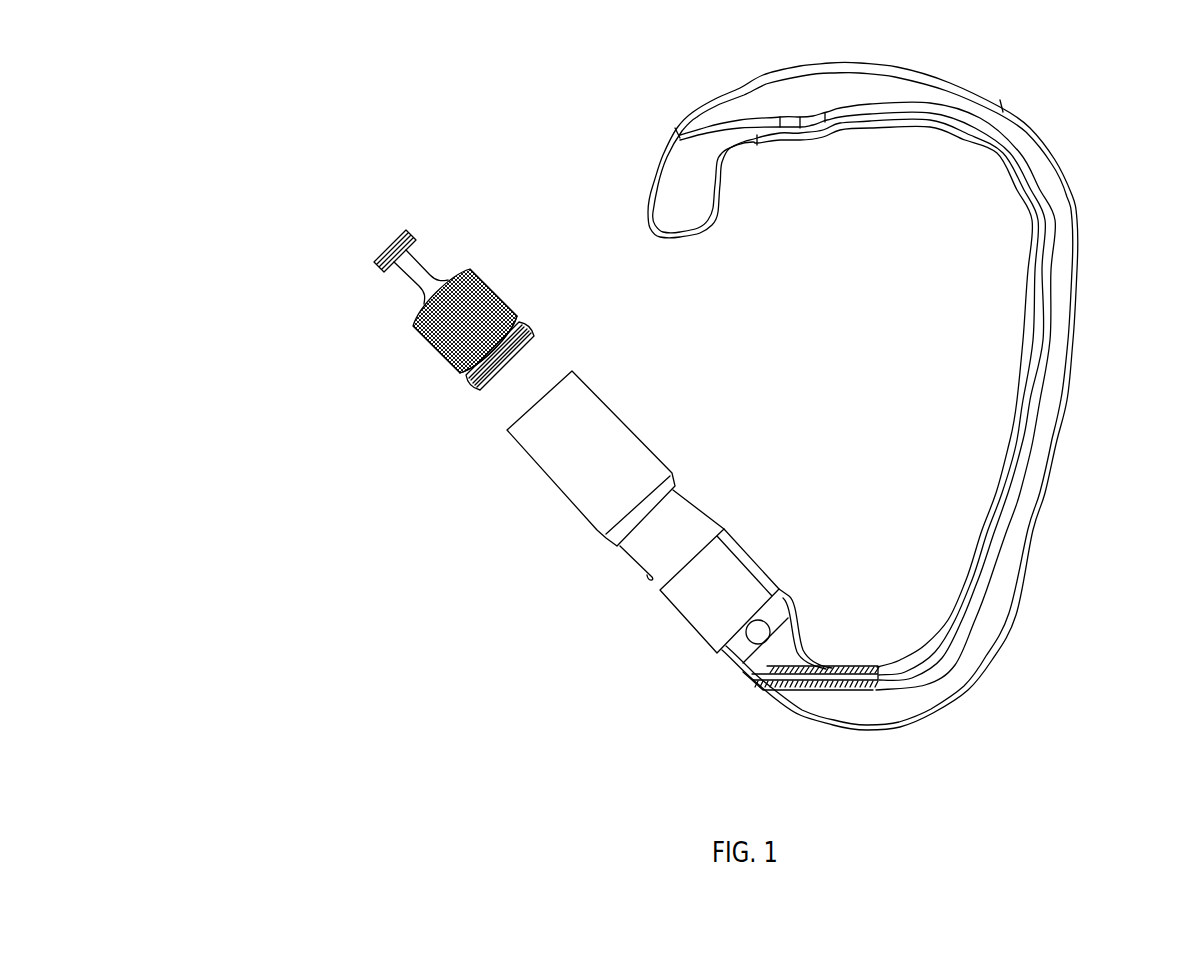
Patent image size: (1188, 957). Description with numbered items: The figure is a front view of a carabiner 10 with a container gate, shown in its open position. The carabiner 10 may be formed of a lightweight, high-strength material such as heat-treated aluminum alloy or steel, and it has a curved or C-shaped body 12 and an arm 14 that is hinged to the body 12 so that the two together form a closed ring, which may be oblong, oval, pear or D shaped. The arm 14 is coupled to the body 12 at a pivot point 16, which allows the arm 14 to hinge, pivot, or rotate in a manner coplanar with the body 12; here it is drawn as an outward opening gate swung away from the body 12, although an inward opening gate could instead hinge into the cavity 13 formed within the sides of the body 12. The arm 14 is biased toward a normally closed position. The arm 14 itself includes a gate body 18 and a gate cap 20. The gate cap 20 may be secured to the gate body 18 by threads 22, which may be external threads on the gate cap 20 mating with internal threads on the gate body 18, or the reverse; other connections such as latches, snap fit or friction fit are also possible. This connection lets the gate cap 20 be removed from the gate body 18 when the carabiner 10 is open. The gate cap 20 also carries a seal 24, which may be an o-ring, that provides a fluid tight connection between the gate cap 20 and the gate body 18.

The carabiner 10 is at (264, 130).
The body 12 is at (1089, 150).
The cavity 13 is at (881, 335).
The arm 14 is at (466, 505).
The pivot point 16 is at (775, 612).
The gate body 18 is at (577, 537).
The gate cap 20 is at (394, 365).
The threads 22 is at (455, 399).
The seal 24 is at (521, 306).